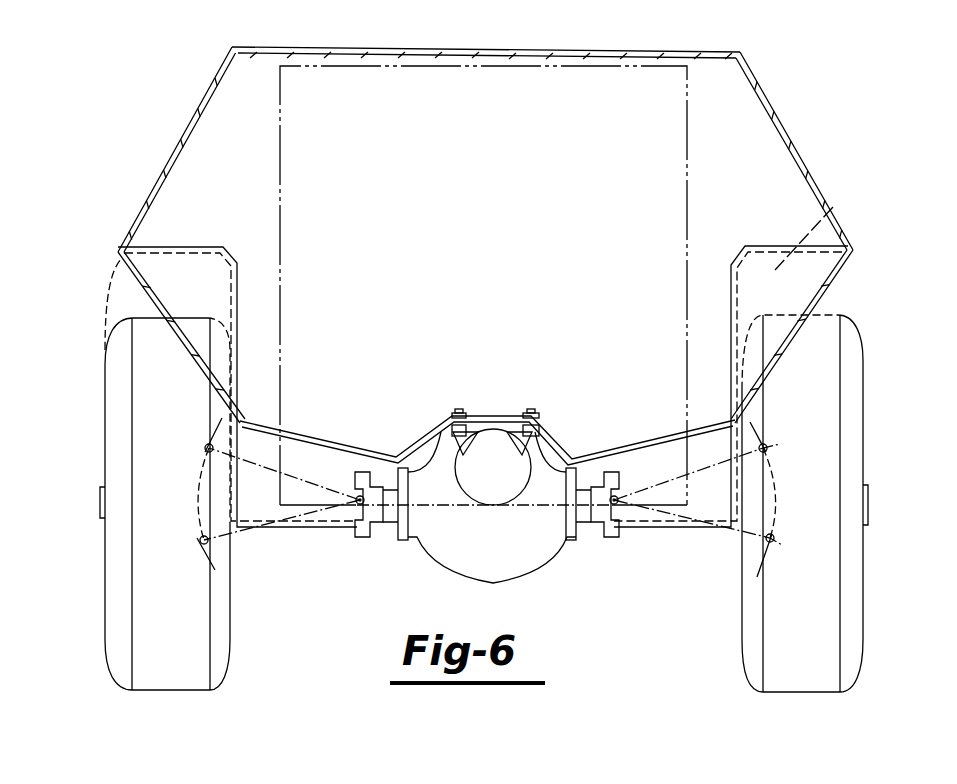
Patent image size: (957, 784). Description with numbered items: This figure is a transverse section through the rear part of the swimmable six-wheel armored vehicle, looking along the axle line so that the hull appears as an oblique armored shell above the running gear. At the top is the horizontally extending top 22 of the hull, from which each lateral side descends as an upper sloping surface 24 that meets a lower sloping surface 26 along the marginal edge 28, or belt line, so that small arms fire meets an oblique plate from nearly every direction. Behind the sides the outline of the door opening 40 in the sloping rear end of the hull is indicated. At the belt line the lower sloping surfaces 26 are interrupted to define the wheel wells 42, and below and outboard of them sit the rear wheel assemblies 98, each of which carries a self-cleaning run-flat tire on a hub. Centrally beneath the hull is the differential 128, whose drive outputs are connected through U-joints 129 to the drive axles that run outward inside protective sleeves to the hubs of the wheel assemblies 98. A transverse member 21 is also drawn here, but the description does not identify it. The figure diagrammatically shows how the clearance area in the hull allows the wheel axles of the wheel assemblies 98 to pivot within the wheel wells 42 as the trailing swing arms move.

The axle frame member 21 is at (317, 443).
The top 22 is at (490, 51).
The upper sloping surface 24 is at (190, 123).
The lower sloping surface 26 is at (150, 295).
The marginal edge 28 is at (115, 252).
The door opening 40 is at (282, 236).
The wheel well 42 is at (833, 207).
The rear wheel assembly 98 is at (186, 680).
The differential 128 is at (493, 562).
The U-joint 129 is at (358, 538).